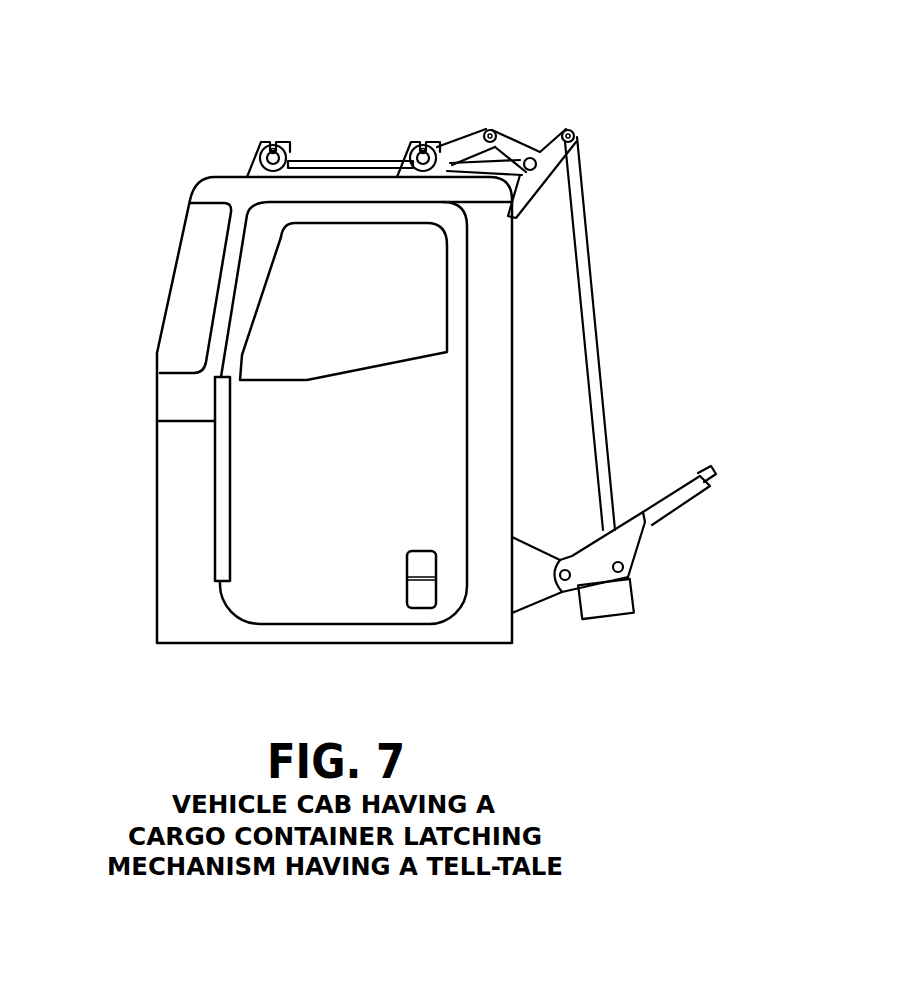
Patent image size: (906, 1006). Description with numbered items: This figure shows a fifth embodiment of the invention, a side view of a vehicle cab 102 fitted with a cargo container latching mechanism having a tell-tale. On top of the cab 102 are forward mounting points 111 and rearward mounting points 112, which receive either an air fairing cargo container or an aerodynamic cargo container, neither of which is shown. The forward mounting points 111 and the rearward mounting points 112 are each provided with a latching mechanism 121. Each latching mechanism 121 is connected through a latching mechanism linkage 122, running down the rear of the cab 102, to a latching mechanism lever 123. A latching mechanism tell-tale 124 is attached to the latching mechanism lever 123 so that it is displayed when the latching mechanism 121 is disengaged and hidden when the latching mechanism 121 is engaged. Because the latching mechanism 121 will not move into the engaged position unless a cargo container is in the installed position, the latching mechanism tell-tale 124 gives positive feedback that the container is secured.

The cab 102 is at (160, 351).
The forward mounting points 111 is at (250, 160).
The rearward mounting points 112 is at (404, 148).
The latching mechanism 121 is at (292, 143).
The latching mechanism linkage 122 is at (589, 242).
The latching mechanism lever 123 is at (693, 498).
The latching mechanism tell-tale 124 is at (637, 596).